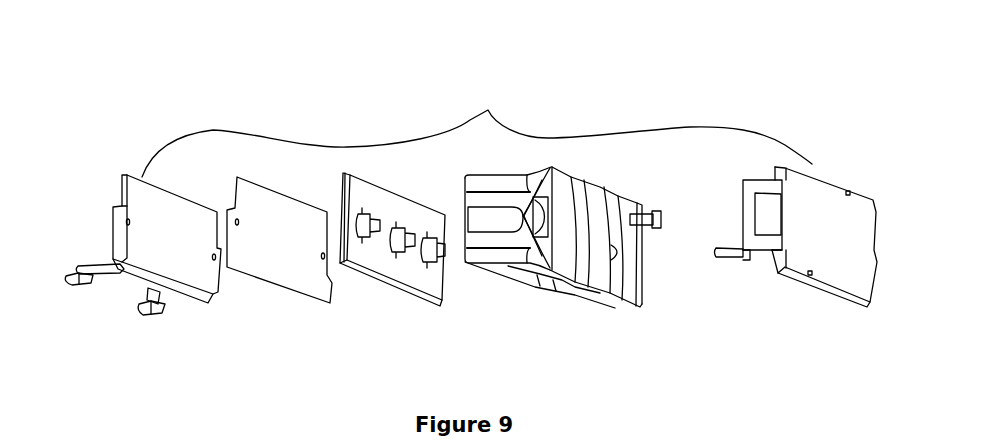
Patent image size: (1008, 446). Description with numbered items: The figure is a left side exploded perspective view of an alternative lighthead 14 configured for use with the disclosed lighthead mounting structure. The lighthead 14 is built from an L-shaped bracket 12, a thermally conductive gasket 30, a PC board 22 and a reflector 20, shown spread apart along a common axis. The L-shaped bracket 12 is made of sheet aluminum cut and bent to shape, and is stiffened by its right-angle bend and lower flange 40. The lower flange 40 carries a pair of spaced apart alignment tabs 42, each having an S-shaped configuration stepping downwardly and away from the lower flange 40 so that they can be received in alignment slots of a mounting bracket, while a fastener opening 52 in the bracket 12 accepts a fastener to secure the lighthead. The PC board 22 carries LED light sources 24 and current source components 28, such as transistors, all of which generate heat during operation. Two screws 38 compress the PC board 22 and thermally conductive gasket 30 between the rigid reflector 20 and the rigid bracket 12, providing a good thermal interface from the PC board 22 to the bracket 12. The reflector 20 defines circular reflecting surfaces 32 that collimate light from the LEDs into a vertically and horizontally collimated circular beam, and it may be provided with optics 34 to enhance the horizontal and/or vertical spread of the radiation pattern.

The L-shaped bracket 12 is at (123, 173).
The lighthead 14 is at (488, 110).
The reflector 20 is at (538, 288).
The PC board 22 is at (416, 255).
The LED light sources 24 is at (371, 216).
The current source components 28 is at (413, 240).
The thermally conductive gasket 30 is at (263, 268).
The circular reflecting surfaces 32 is at (587, 275).
The optics 34 is at (828, 278).
The screws 38 is at (653, 226).
The lower flange 40 is at (112, 265).
The alignment tabs 42 is at (72, 291).
The fastener opening 52 is at (160, 300).